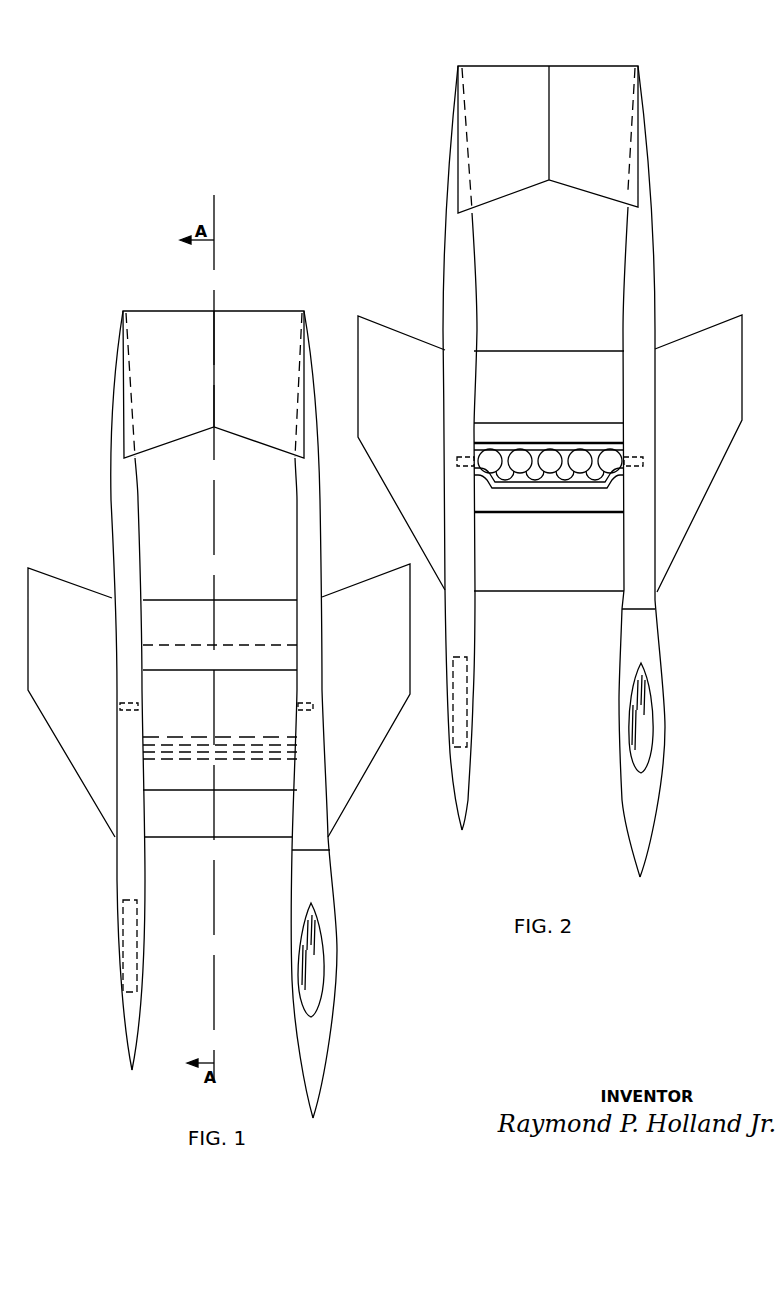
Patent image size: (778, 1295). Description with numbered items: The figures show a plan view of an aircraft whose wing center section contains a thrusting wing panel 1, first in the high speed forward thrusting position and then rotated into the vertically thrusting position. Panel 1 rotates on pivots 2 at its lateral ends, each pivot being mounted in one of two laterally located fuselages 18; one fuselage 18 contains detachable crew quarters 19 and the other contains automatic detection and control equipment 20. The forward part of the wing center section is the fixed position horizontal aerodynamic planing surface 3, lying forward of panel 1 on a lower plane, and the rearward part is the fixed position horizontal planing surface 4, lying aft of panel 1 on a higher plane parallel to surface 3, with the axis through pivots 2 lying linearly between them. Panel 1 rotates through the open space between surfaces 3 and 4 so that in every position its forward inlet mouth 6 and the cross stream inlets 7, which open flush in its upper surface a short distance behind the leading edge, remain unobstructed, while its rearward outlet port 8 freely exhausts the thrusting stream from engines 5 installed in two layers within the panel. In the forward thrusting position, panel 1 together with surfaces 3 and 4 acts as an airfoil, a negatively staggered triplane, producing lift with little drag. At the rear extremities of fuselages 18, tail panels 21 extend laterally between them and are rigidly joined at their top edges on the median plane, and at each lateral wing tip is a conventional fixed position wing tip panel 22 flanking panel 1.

In FIG. 1, the thrusting wing panel 1 is at (242, 712).
In FIG. 2, the thrusting wing panel 1 is at (532, 442).
In FIG. 1, the pivots 2 is at (118, 706).
In FIG. 2, the pivots 2 is at (457, 462).
In FIG. 1, the fixed position horizontal aerodynamic planing surface 3 is at (253, 825).
In FIG. 2, the fixed position horizontal aerodynamic planing surface 3 is at (557, 580).
In FIG. 1, the fixed position horizontal planing surface 4 is at (250, 598).
In FIG. 2, the fixed position horizontal planing surface 4 is at (570, 368).
In FIG. 2, the engines 5 is at (535, 472).
In FIG. 1, the thrusting wing panel forward inlet mouth 6 is at (188, 790).
In FIG. 2, the thrusting wing panel forward inlet mouth 6 is at (552, 473).
In FIG. 1, the power panel cross stream inlets 7 is at (172, 737).
In FIG. 1, the thrusting wing panel rearward outlet port 8 is at (187, 645).
In FIG. 1, the fuselage 18 is at (130, 538).
In FIG. 2, the fuselage 18 is at (465, 267).
In FIG. 1, the detachable crew quarters 19 is at (313, 967).
In FIG. 2, the detachable crew quarters 19 is at (647, 723).
In FIG. 1, the automatic detection and control equipment 20 is at (125, 935).
In FIG. 2, the automatic detection and control equipment 20 is at (463, 738).
In FIG. 1, the tail panels 21 is at (249, 323).
In FIG. 2, the tail panels 21 is at (607, 78).
In FIG. 1, the wing tip panel 22 is at (370, 737).
In FIG. 2, the wing tip panel 22 is at (377, 333).